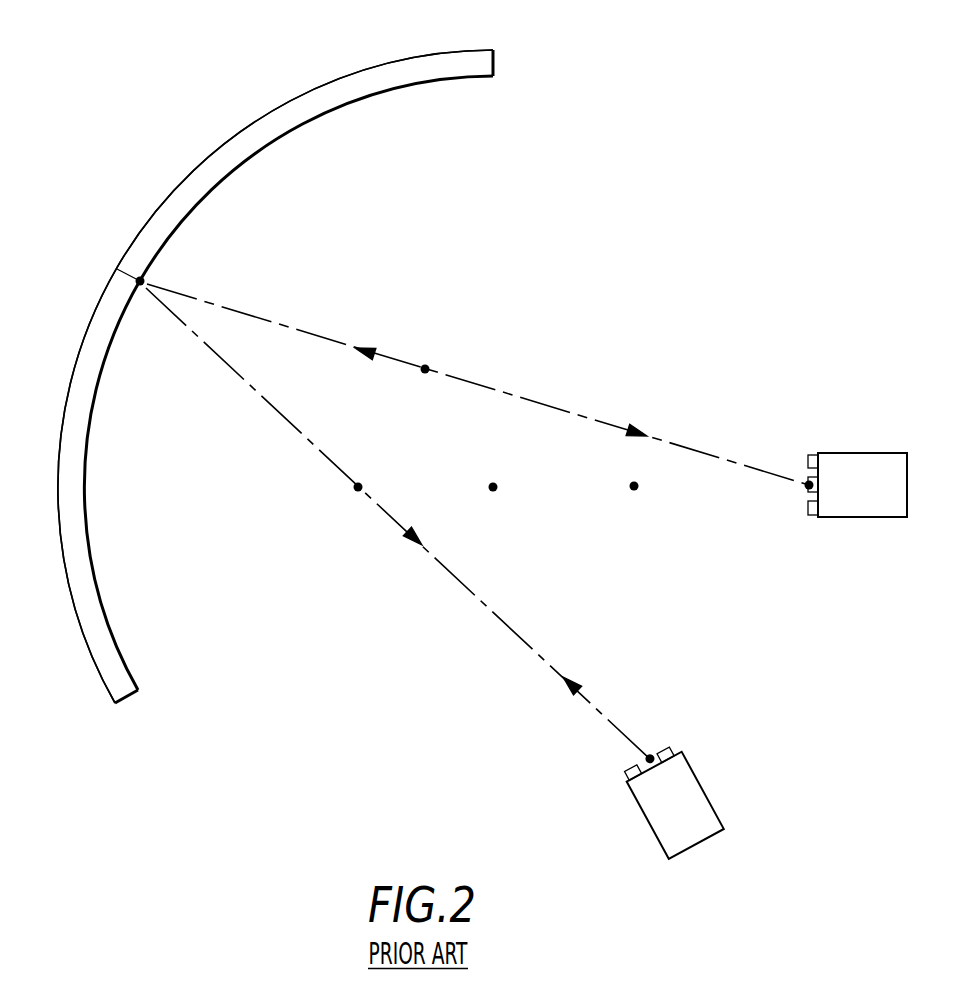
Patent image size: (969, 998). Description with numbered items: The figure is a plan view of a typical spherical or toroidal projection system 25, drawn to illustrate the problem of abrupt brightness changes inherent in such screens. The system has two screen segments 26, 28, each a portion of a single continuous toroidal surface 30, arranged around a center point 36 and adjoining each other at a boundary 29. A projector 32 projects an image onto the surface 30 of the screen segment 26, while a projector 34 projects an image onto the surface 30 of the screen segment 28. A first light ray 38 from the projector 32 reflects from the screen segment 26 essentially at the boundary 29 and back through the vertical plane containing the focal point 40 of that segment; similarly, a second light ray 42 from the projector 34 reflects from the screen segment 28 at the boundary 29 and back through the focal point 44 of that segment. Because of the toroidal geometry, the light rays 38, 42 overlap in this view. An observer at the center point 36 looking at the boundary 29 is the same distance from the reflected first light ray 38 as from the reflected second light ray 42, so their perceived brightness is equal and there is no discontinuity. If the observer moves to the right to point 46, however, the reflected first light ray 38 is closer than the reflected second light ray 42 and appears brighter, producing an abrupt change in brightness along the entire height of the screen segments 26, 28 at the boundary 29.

The toroidal projection system 25 is at (573, 248).
The screen segment 26 is at (350, 70).
The screen segment 28 is at (59, 440).
The boundary 29 is at (147, 278).
The toroidal surface 30 is at (455, 78).
The projector 32 is at (713, 785).
The projector 34 is at (866, 521).
The center point 36 is at (500, 485).
The first light ray 38 is at (640, 426).
The focal point 40 is at (430, 365).
The second light ray 42 is at (368, 350).
The focal point 44 is at (352, 491).
The point 46 is at (638, 493).